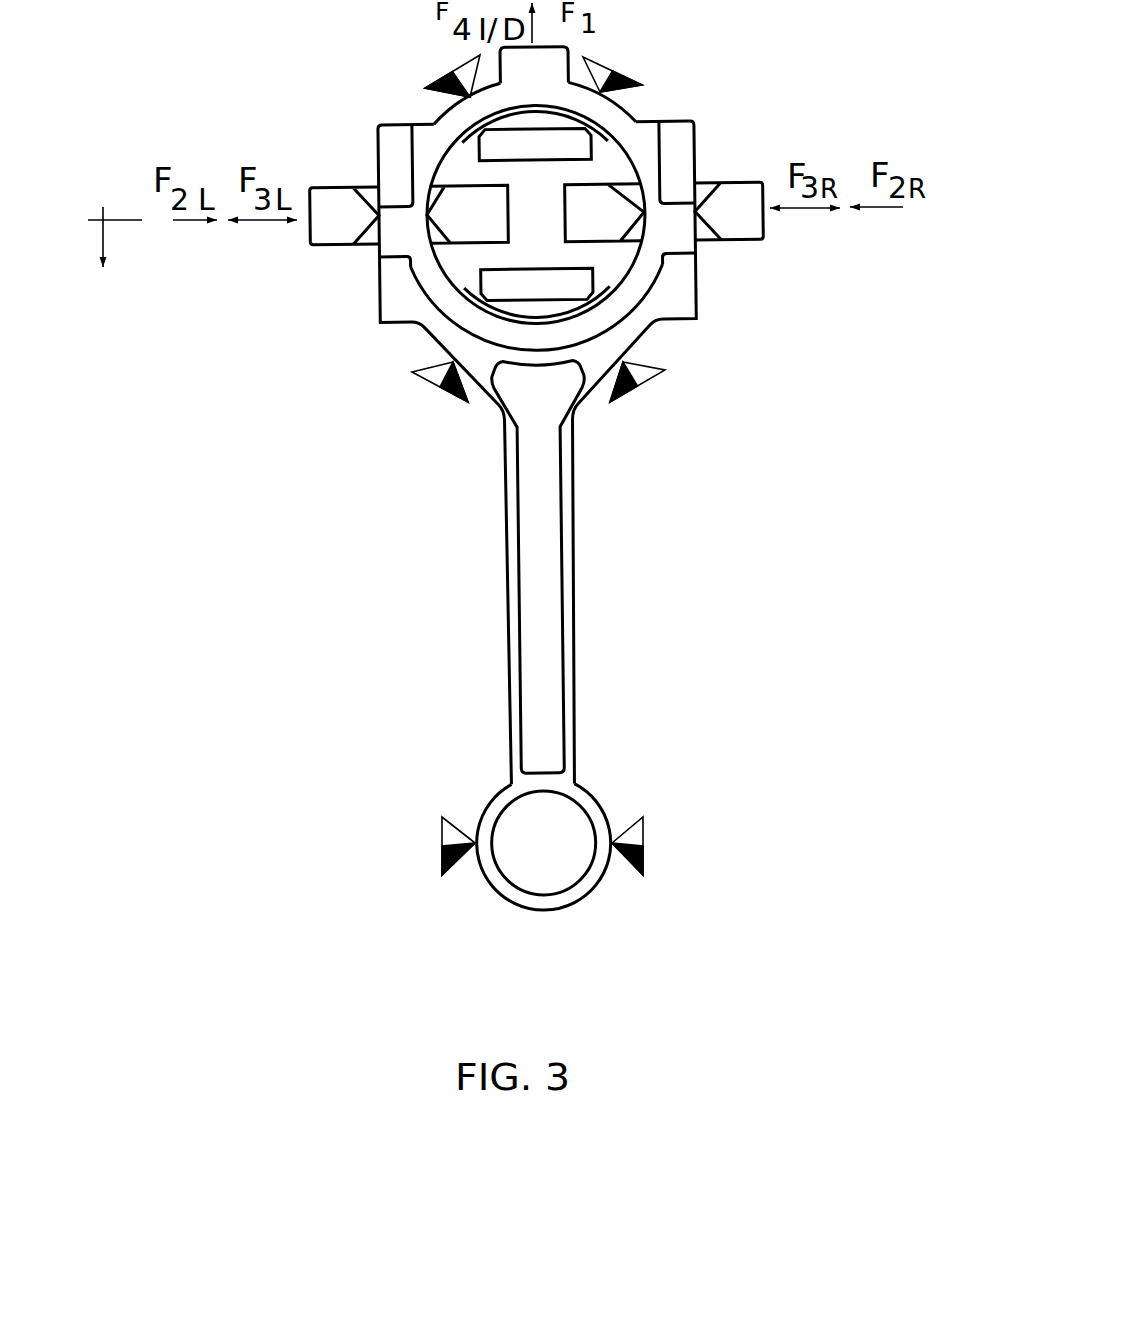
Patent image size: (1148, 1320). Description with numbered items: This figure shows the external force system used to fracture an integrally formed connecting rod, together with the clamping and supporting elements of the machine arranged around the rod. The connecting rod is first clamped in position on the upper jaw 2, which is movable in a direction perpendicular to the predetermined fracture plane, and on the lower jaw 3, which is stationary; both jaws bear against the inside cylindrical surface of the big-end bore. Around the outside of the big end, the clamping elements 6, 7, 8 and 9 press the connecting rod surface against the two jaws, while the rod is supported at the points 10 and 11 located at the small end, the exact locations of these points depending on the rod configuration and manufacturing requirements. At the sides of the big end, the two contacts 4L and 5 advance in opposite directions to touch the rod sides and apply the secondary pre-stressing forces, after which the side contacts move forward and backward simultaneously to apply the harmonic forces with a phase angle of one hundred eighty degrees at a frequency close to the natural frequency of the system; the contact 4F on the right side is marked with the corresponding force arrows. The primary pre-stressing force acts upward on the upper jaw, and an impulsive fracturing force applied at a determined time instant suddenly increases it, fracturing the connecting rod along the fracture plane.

The upper jaw 2 is at (478, 145).
The lower jaw 3 is at (480, 290).
The contact 4L is at (340, 247).
The right side pin 4F is at (738, 172).
The contact 5 is at (109, 225).
The clamping element 6 is at (447, 63).
The clamping element 7 is at (612, 78).
The clamping element 8 is at (433, 400).
The clamping element 9 is at (645, 400).
The support point 10 is at (442, 845).
The support point 11 is at (643, 843).